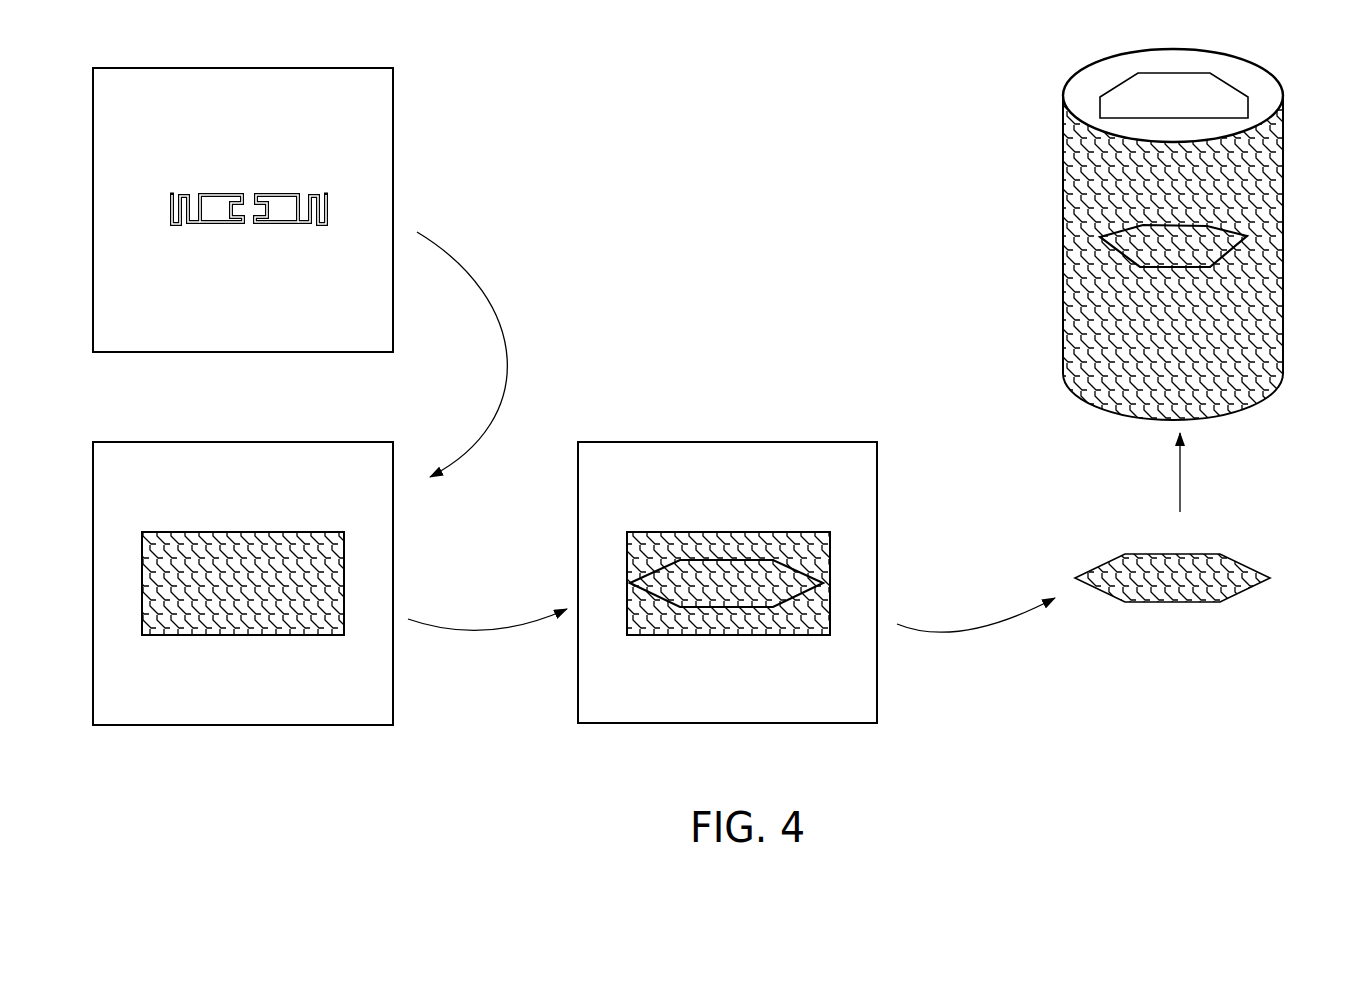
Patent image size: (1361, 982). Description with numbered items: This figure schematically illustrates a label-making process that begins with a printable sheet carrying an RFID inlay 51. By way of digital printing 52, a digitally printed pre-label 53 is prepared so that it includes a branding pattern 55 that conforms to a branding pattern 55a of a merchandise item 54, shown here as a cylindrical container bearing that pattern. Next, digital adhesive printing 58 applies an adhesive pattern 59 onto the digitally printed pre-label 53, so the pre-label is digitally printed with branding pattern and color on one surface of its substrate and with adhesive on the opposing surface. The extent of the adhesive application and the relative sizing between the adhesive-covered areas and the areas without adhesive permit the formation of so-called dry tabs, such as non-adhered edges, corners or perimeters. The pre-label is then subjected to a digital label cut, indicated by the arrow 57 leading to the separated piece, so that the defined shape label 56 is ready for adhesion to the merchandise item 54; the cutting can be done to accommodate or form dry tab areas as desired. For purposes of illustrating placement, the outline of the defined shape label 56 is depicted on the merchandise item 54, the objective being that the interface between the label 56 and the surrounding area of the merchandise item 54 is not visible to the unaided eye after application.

The RFID inlay 51 is at (340, 187).
The digital printing 52 is at (503, 338).
The digitally printed pre-label 53 is at (248, 635).
The merchandise item 54 is at (1063, 153).
The branding pattern 55 is at (335, 563).
The branding pattern of merchandise item 55a is at (1110, 390).
The defined shape label 56 is at (1198, 603).
The step of cutting out patch 57 is at (977, 628).
The digital adhesive printing 58 is at (488, 630).
The adhesive pattern 59 is at (793, 602).